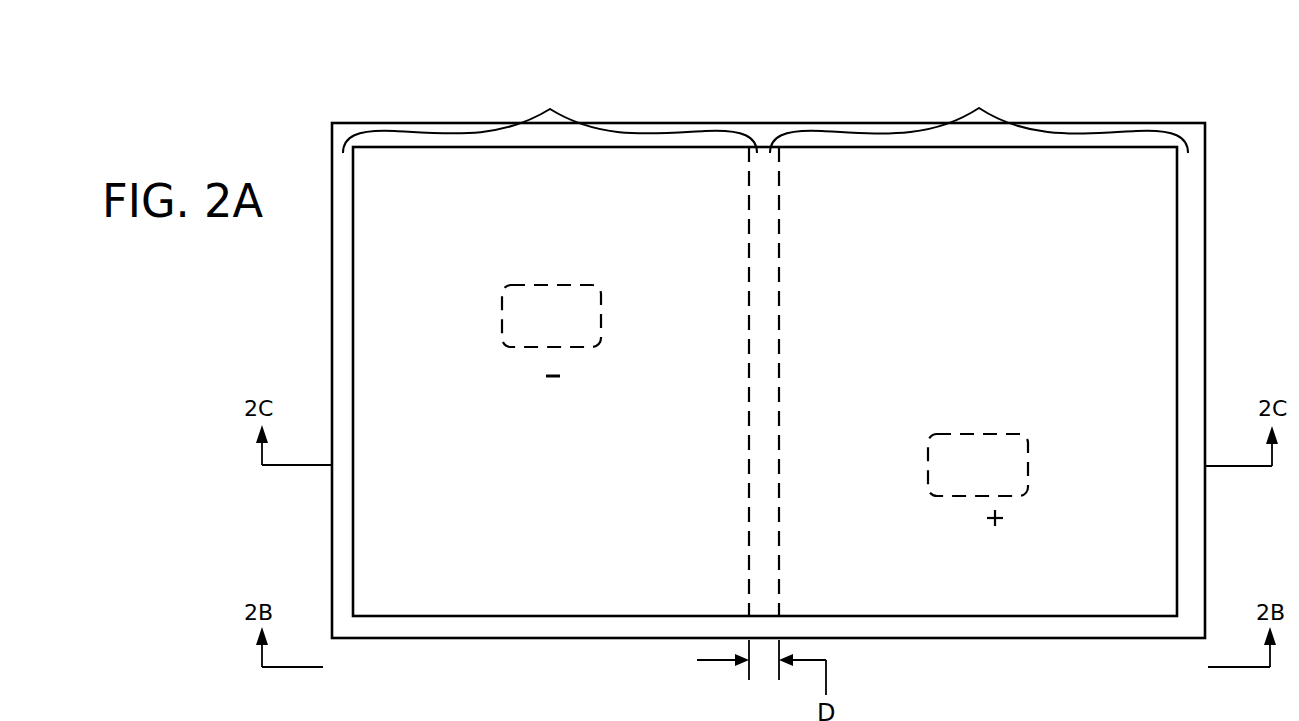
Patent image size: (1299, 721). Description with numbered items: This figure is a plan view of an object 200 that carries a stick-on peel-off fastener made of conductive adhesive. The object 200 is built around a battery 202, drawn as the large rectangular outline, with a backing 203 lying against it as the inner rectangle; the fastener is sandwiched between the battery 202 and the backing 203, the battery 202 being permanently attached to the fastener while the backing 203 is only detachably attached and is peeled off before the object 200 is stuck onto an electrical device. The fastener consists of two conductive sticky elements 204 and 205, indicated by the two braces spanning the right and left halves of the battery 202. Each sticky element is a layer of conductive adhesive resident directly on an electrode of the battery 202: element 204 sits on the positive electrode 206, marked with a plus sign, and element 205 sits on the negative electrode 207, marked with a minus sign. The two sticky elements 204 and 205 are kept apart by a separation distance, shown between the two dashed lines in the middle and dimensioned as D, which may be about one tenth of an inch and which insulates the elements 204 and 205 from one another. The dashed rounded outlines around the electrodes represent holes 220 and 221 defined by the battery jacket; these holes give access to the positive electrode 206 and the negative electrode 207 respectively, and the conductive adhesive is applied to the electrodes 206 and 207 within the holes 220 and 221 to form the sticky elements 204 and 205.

The object 200 is at (768, 364).
The battery 202 is at (410, 628).
The backing 203 is at (583, 588).
The conductive sticky element 204 is at (979, 112).
The conductive sticky element 205 is at (550, 117).
The positive electrode 206 is at (1004, 486).
The negative electrode 207 is at (573, 339).
The hole 220 is at (985, 434).
The hole 221 is at (565, 285).